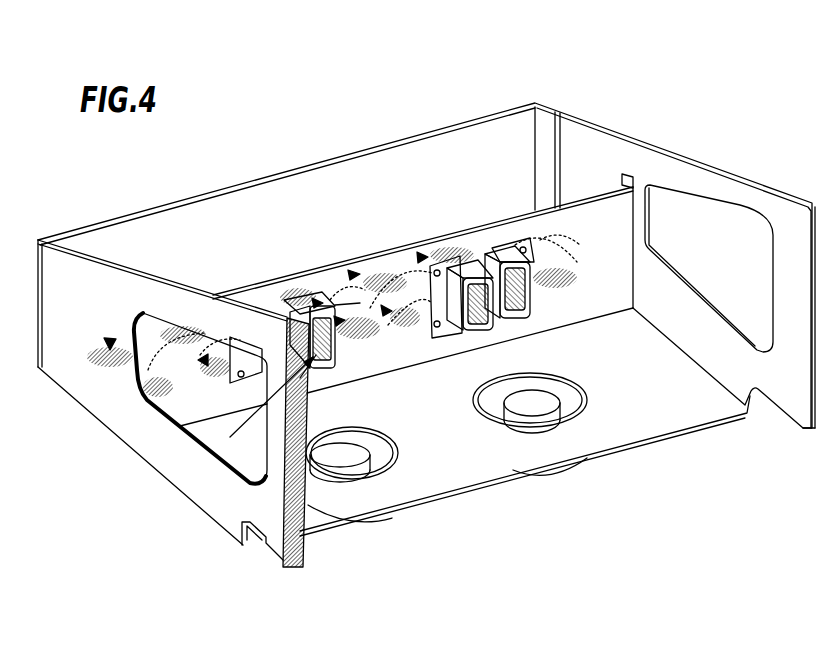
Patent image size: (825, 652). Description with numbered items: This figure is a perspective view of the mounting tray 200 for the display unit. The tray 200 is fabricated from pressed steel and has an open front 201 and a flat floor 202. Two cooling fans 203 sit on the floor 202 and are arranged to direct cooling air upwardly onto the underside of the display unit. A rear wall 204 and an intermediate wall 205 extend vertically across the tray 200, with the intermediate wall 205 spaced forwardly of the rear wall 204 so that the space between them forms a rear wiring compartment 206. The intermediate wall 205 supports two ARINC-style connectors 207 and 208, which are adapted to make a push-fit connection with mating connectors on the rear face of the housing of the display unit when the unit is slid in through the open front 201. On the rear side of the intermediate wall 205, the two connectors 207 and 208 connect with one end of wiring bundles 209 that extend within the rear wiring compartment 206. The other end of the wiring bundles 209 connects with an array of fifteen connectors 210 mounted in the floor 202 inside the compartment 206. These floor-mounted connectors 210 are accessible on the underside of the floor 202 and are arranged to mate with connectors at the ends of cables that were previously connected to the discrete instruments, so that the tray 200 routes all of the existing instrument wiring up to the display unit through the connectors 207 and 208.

The tray 200 is at (592, 112).
The open front 201 is at (310, 512).
The flat floor 202 is at (467, 487).
The cooling fan 203 is at (375, 463).
The rear wall 204 is at (456, 140).
The intermediate wall 205 is at (613, 213).
The rear wiring compartment 206 is at (430, 167).
The ARINC-style connector 207 is at (268, 408).
The ARINC-style connector 208 is at (487, 236).
The wiring bundle 209 is at (245, 336).
The floor-mounted connector 210 is at (425, 256).